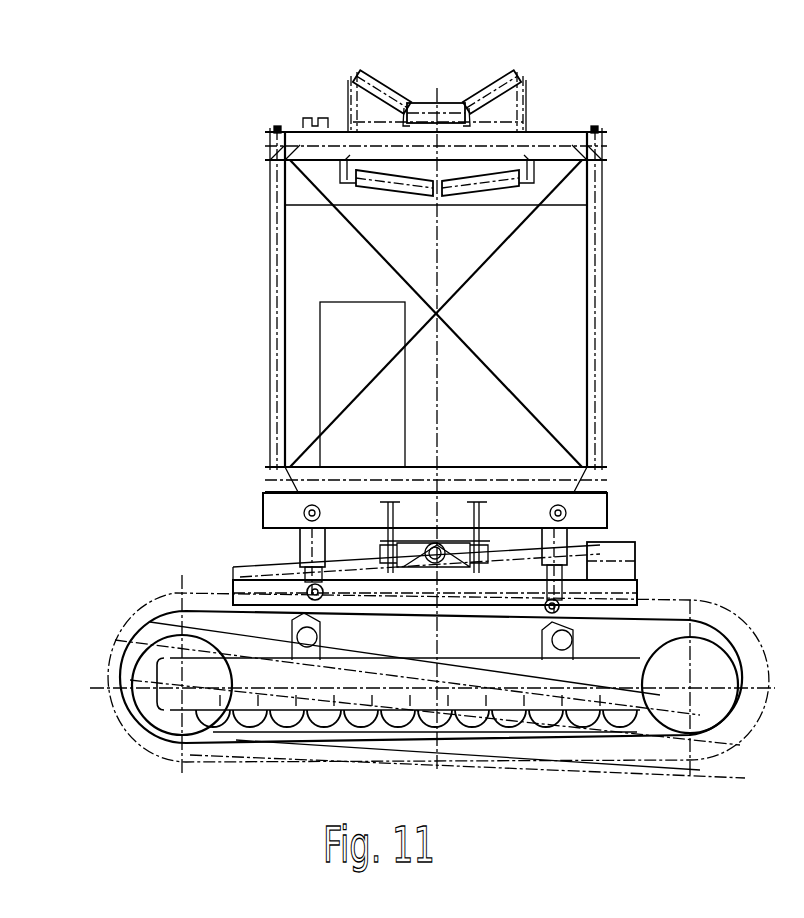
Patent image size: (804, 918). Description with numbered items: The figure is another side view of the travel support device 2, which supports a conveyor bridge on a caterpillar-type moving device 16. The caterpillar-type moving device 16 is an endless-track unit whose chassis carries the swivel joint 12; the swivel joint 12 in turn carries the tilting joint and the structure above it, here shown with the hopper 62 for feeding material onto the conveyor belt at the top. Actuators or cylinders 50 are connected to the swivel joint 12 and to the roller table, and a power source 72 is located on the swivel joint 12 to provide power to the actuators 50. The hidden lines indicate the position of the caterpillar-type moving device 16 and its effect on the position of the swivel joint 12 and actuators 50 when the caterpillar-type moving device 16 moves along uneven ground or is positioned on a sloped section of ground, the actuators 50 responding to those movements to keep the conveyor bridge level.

The travel support device 2 is at (622, 318).
The hopper 62 is at (463, 102).
The actuators or cylinders 50 is at (566, 540).
The power source 72 is at (635, 550).
The swivel joint 12 is at (640, 598).
The caterpillar-type moving device 16 is at (138, 588).